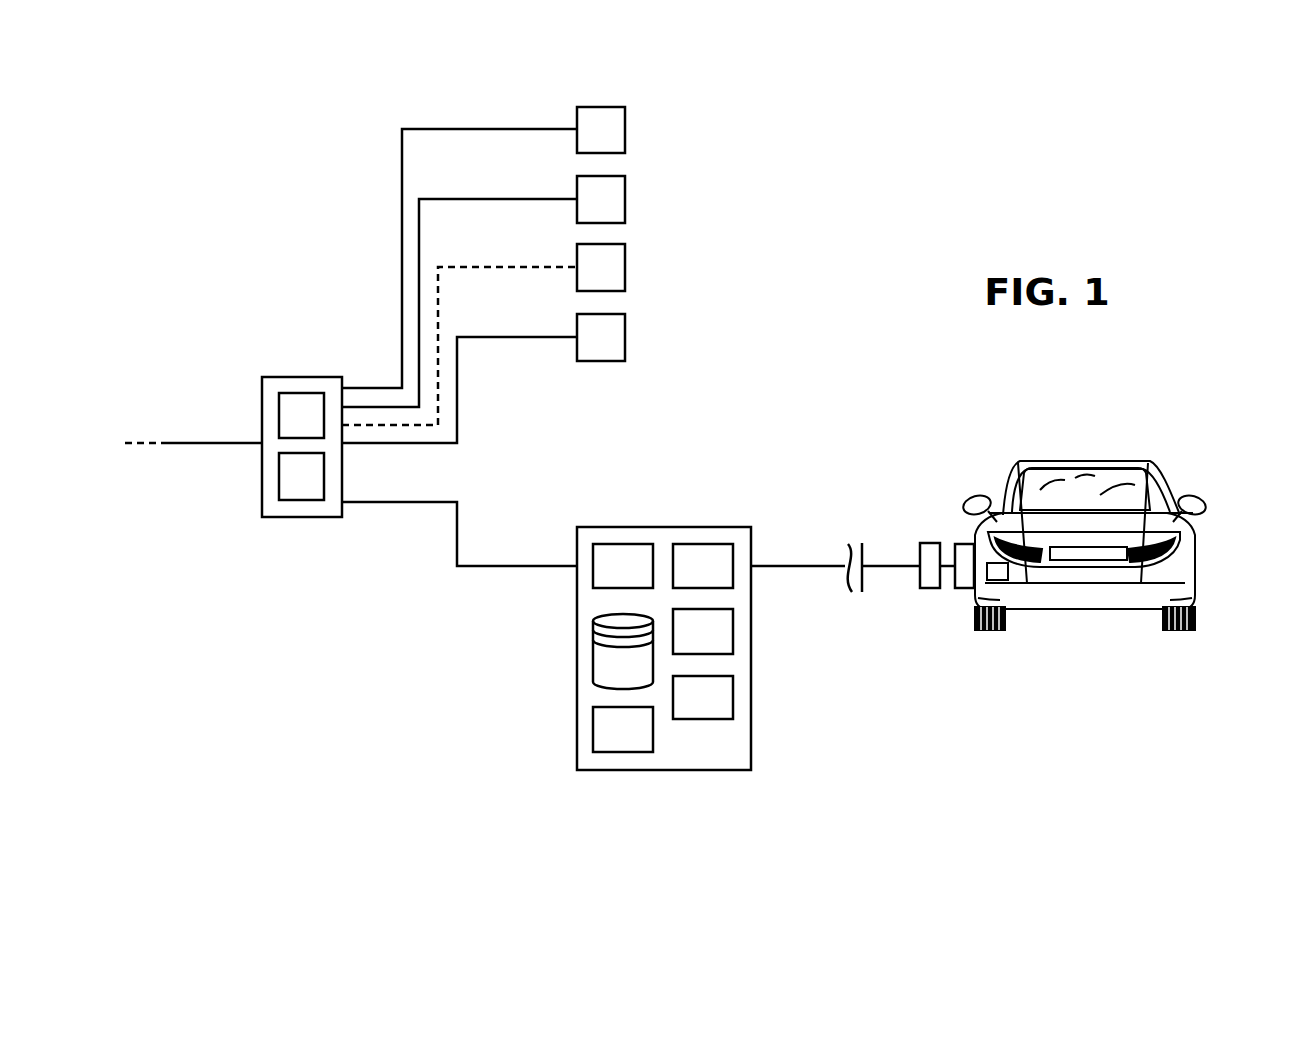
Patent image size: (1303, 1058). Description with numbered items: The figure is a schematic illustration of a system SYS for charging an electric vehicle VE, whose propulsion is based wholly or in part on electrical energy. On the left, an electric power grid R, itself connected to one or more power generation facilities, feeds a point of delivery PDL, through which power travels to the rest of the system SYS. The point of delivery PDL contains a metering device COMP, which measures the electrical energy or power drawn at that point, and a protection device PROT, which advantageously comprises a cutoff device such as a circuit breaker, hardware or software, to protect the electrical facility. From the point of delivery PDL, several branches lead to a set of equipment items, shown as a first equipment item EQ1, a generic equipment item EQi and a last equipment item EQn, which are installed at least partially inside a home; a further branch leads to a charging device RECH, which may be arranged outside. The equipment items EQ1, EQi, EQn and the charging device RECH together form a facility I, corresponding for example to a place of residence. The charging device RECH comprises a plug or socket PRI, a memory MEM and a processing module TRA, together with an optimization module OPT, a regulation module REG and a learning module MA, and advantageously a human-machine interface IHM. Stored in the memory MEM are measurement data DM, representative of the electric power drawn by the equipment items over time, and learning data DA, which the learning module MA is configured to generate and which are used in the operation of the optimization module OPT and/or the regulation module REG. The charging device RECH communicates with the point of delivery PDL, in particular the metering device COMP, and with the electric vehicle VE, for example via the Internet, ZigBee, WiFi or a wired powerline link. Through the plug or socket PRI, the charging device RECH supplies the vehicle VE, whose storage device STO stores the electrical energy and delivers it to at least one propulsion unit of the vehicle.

The facility I is at (873, 208).
The system SYS is at (779, 395).
The electric vehicle VE is at (1118, 538).
The electric power grid R is at (183, 462).
The point of delivery PDL is at (295, 468).
The protection device PROT is at (293, 392).
The metering device COMP is at (310, 499).
The equipment item EQ1 is at (630, 117).
The equipment item EQi is at (629, 257).
The equipment item EQn is at (629, 327).
The charging device RECH is at (656, 665).
The optimization module OPT is at (612, 543).
The regulation module REG is at (713, 543).
The learning module MA is at (733, 632).
The human-machine interface IHM is at (733, 702).
The processing module TRA is at (612, 753).
The memory MEM is at (561, 661).
The measurement data DM is at (598, 623).
The learning data DA is at (610, 668).
The plug or socket PRI is at (928, 542).
The storage device STO is at (1000, 575).